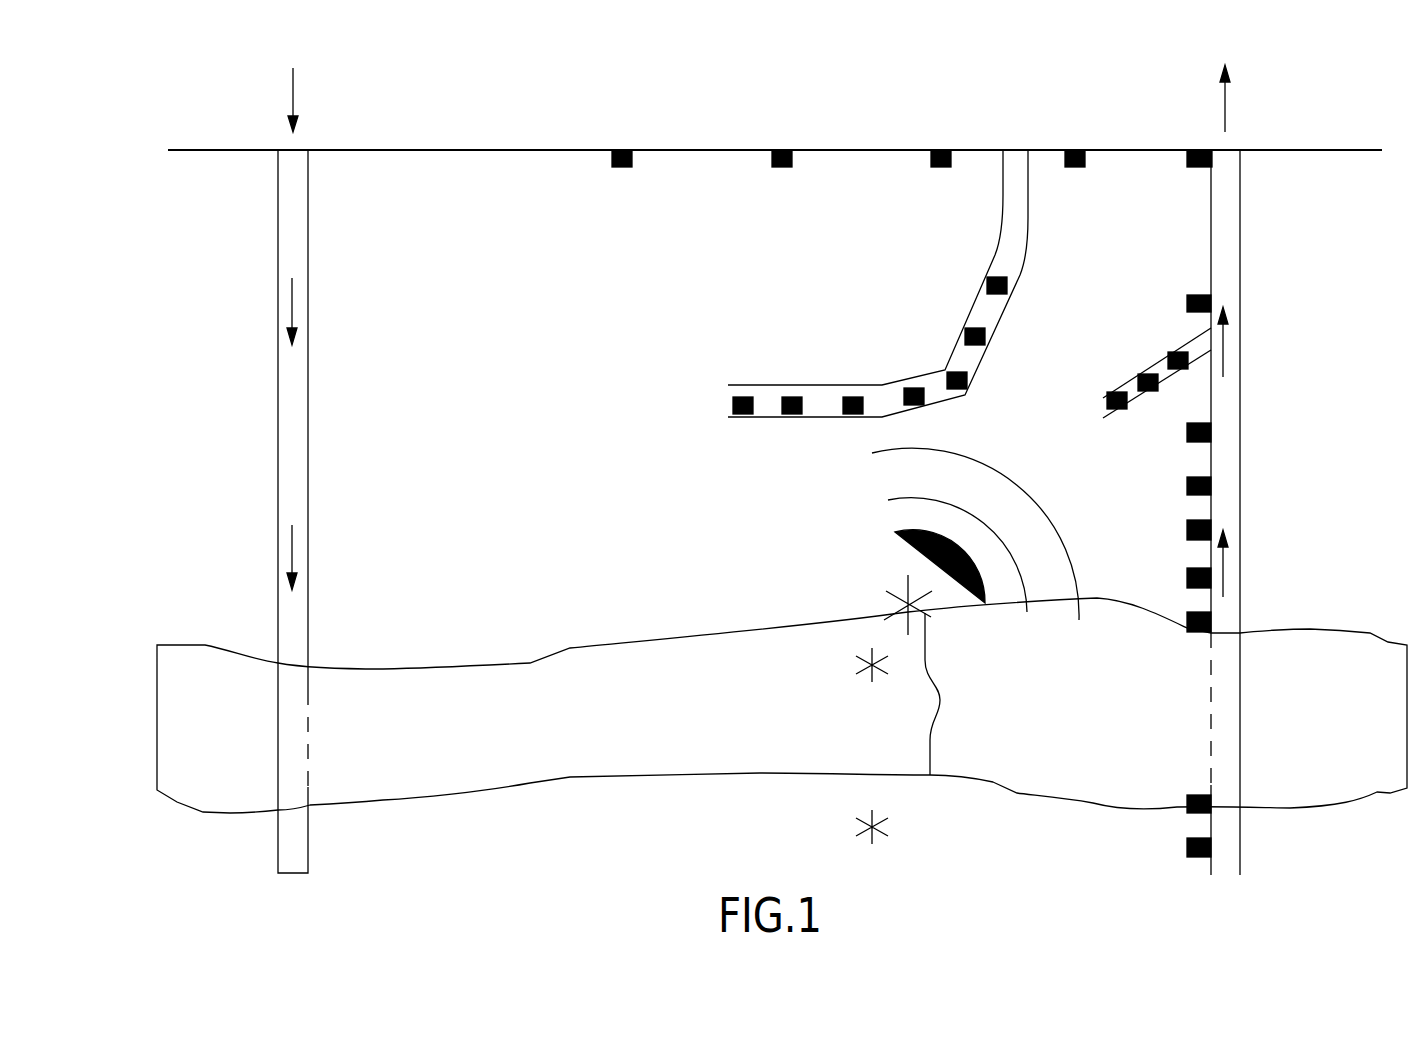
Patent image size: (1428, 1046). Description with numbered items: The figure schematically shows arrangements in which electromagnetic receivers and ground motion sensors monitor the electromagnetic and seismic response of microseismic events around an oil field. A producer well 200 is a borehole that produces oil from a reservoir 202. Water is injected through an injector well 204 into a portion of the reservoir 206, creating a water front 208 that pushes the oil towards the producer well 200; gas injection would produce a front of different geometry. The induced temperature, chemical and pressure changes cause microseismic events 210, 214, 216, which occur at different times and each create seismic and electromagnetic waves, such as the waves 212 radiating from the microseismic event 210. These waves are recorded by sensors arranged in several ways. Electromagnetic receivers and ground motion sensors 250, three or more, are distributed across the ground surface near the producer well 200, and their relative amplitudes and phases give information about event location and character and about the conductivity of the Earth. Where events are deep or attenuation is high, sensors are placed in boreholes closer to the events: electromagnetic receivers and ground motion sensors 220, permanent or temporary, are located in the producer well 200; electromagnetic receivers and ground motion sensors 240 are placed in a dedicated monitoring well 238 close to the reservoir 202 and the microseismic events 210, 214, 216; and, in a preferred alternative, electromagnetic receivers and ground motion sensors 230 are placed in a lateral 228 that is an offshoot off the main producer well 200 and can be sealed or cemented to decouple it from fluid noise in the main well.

The producer well 200 is at (1241, 292).
The reservoir 202 is at (1088, 697).
The injector well 204 is at (310, 290).
The portion of the reservoir 206 is at (583, 733).
The water front 208 is at (934, 738).
The microseismic event 210 is at (900, 605).
The seismic and electromagnetic waves 212 is at (904, 496).
The microseismic event 214 is at (862, 662).
The microseismic event 216 is at (862, 825).
The electromagnetic receivers and ground motion sensors 220 is at (1187, 622).
The lateral 228 is at (1130, 402).
The electromagnetic receivers and ground motion sensors 230 is at (1176, 352).
The dedicated monitoring well 238 is at (1019, 280).
The electromagnetic receivers and ground motion sensors 240 is at (745, 397).
The electromagnetic receivers and ground motion sensors 250 is at (622, 150).